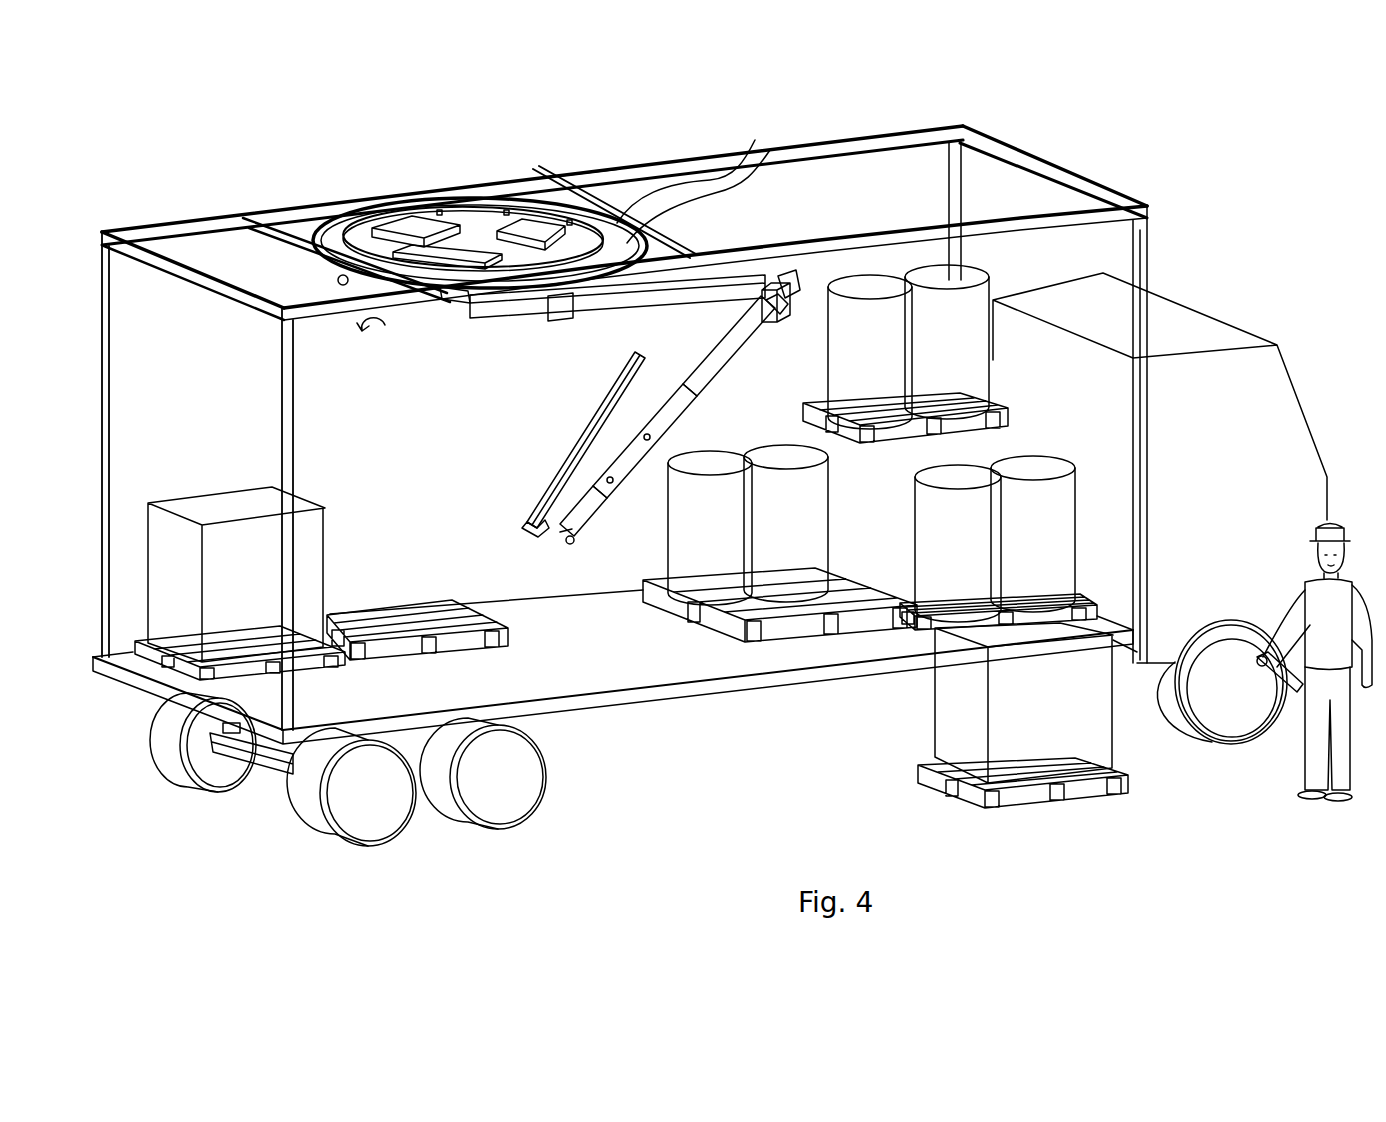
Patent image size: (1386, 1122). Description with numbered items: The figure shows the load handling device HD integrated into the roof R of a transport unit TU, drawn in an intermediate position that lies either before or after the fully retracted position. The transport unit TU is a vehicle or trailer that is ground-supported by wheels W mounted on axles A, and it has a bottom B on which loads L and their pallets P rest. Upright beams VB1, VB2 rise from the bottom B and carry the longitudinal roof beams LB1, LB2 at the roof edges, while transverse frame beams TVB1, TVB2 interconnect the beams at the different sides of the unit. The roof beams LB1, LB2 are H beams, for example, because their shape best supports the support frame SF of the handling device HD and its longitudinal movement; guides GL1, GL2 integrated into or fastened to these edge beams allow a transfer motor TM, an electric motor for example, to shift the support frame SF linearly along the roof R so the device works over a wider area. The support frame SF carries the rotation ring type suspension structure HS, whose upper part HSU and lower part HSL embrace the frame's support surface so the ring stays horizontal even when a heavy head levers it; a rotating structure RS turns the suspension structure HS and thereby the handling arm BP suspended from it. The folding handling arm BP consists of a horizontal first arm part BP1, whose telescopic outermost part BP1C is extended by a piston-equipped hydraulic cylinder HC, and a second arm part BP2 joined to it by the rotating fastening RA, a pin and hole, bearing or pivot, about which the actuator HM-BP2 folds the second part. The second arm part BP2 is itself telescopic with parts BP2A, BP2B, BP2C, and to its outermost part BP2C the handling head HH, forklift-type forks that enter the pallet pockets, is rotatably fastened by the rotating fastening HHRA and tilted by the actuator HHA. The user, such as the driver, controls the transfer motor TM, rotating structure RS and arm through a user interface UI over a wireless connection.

The roof R is at (879, 126).
The transport unit TU is at (1240, 192).
The transverse frame beam TVB1 is at (193, 288).
The transverse frame beam TVB2 is at (1047, 163).
The upright beam VB1 is at (112, 386).
The upright beam VB2 is at (300, 403).
The longitudinal roof beam LB1 is at (627, 163).
The longitudinal roof beam LB2 is at (980, 226).
The transfer motor TM is at (308, 210).
The suspension structure HS is at (483, 207).
The guide GL1 is at (592, 172).
The guide GL2 is at (389, 329).
The upper part of suspension structure HSU is at (713, 148).
The lower part of suspension structure HSL is at (727, 170).
The support frame SF is at (647, 231).
The rotating structure RS is at (450, 294).
The hydraulic cylinder HC is at (548, 312).
The handling arm BP is at (680, 341).
The first arm part BP1 is at (588, 326).
The outermost part of first arm part BP1C is at (752, 257).
The actuator HM-BP2 is at (800, 310).
The second arm part BP2 is at (658, 393).
The telescopic part of second arm part BP2A is at (696, 396).
The telescopic part of second arm part BP2B is at (637, 468).
The outermost part of second arm part BP2C is at (584, 532).
The rotating fastening RA is at (768, 318).
The handling device HD is at (470, 426).
The handling head HH is at (573, 438).
The actuator HHA is at (547, 540).
The rotating fastening of handling head HHRA is at (566, 540).
The load L is at (317, 537).
The pallet P is at (332, 663).
The bottom B is at (550, 700).
The axle A is at (275, 790).
The wheel W is at (398, 832).
The user interface UI is at (1283, 697).